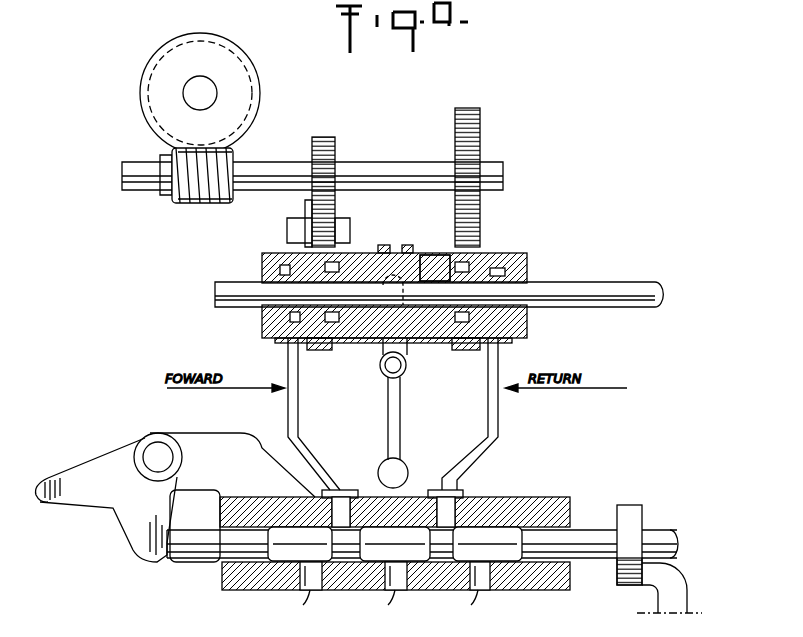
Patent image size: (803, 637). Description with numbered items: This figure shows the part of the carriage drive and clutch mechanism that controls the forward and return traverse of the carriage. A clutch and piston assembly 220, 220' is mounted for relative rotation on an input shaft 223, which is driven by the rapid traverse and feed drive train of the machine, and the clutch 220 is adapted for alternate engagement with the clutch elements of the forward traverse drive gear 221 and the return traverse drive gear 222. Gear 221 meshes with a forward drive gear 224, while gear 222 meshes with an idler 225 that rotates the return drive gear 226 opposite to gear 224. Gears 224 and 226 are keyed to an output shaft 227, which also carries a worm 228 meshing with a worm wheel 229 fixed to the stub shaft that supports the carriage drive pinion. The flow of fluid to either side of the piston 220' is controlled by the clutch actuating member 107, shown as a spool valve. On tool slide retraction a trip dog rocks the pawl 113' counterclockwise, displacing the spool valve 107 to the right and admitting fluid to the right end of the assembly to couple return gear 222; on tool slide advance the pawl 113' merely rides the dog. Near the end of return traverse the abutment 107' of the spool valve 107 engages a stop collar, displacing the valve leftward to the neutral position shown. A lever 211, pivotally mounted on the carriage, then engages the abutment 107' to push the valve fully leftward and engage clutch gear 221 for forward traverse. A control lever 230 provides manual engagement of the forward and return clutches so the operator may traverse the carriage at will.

The clutch actuating member 107 is at (422, 547).
The abutment 107' is at (642, 521).
The pawl 113' is at (109, 495).
The lever 211 is at (680, 592).
The clutch 220 is at (394, 276).
The piston 220' is at (431, 250).
The forward traverse drive gear 221 is at (466, 350).
The return traverse drive gear 222 is at (318, 346).
The input shaft 223 is at (603, 290).
The forward drive gear 224 is at (477, 100).
The idler 225 is at (338, 232).
The return drive gear 226 is at (318, 137).
The output shaft 227 is at (383, 168).
The worm 228 is at (192, 204).
The worm wheel 229 is at (262, 85).
The control lever 230 is at (400, 428).